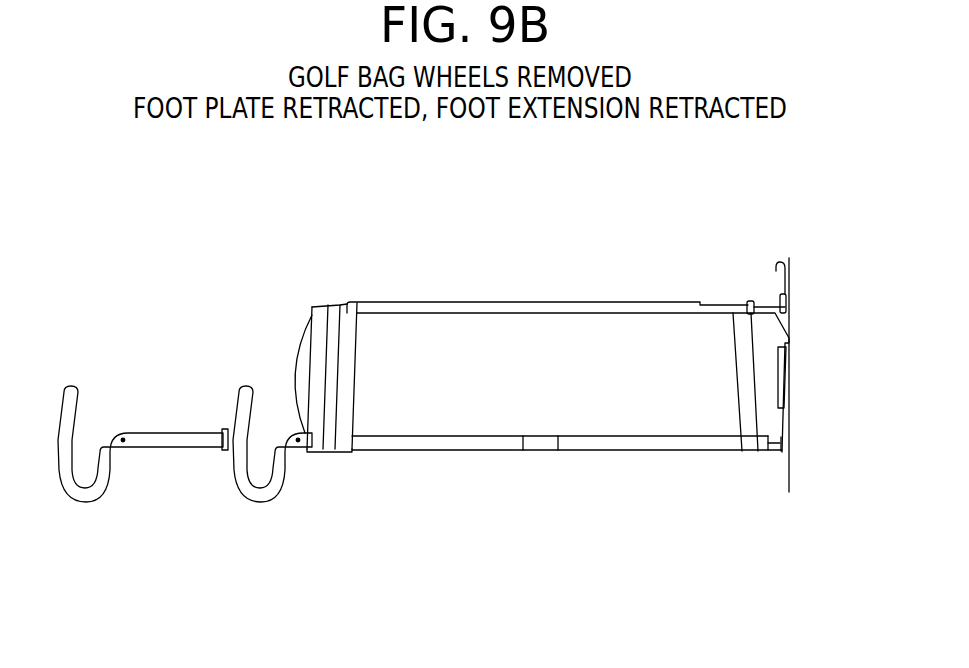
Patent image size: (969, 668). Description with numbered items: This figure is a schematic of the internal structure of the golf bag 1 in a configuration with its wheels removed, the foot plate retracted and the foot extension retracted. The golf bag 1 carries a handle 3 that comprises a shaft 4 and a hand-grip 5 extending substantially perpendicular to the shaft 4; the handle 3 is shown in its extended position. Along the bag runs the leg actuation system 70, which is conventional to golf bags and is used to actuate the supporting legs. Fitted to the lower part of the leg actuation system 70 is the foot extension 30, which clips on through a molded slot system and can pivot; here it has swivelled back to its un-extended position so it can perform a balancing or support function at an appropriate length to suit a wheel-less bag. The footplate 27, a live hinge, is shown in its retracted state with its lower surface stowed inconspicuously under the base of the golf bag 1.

The golf bag 1 is at (624, 288).
The handle 3 is at (202, 479).
The shaft 4 is at (185, 432).
The hand-grip 5 is at (74, 498).
The footplate 27 is at (785, 390).
The foot extension 30 is at (783, 258).
The leg actuation system 70 is at (413, 305).